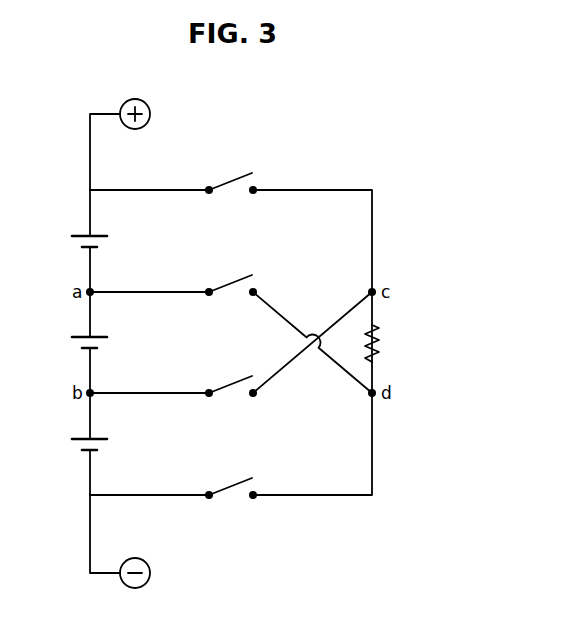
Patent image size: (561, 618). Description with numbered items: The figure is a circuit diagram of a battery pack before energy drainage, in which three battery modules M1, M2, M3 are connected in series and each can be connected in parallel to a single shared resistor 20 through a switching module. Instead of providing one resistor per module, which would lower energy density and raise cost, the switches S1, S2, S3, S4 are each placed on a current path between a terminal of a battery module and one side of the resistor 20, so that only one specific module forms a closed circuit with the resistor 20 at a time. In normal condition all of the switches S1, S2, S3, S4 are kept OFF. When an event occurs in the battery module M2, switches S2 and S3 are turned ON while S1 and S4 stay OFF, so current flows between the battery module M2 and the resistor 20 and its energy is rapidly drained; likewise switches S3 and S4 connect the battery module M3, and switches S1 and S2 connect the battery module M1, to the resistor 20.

The resistor 20 is at (380, 341).
The switch S1 is at (233, 482).
The switch S2 is at (233, 380).
The switch S3 is at (233, 279).
The switch S4 is at (233, 177).
The battery module M1 is at (72, 447).
The battery module M2 is at (72, 345).
The battery module M3 is at (72, 244).